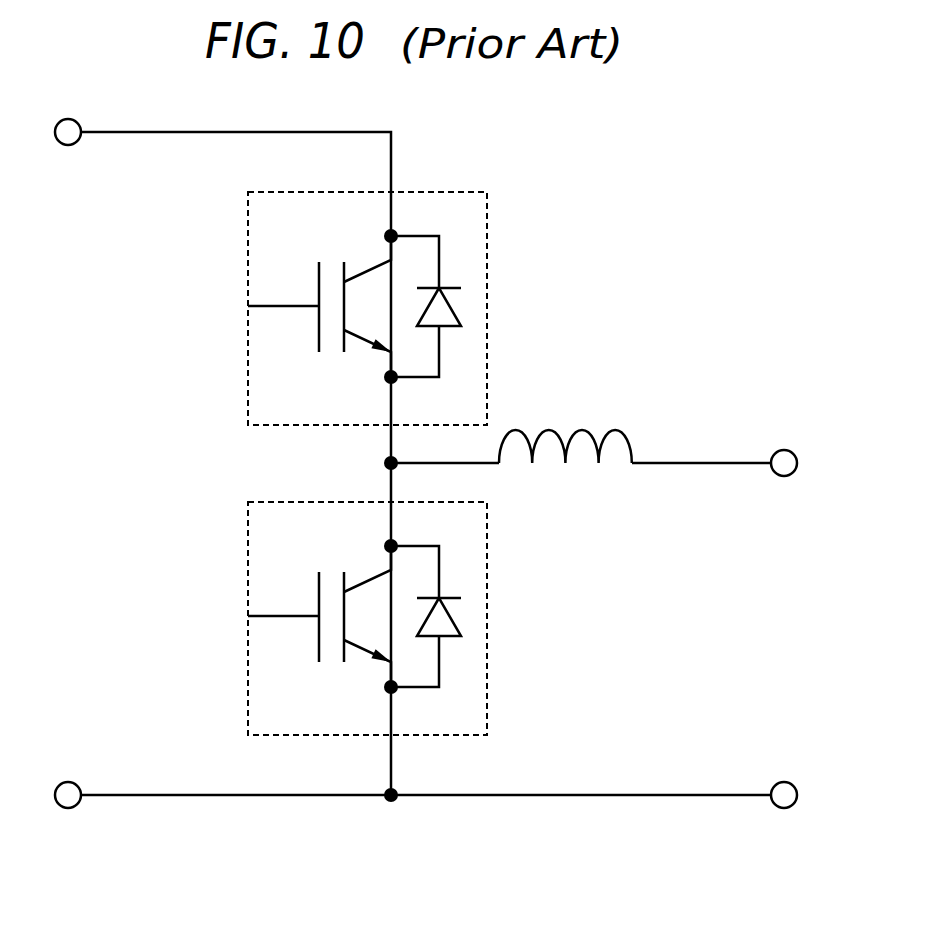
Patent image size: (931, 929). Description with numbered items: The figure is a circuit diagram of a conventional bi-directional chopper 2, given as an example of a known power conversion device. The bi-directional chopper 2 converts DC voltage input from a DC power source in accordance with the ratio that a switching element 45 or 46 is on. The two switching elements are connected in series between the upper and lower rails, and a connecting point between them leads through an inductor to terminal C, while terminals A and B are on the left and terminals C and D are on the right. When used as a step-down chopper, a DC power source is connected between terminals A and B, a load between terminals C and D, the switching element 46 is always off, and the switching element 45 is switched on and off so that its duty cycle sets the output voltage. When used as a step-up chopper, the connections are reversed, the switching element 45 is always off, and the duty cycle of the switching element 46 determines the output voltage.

The bi-directional chopper 2 is at (680, 135).
The switching element 45 is at (487, 215).
The switching element 46 is at (487, 525).